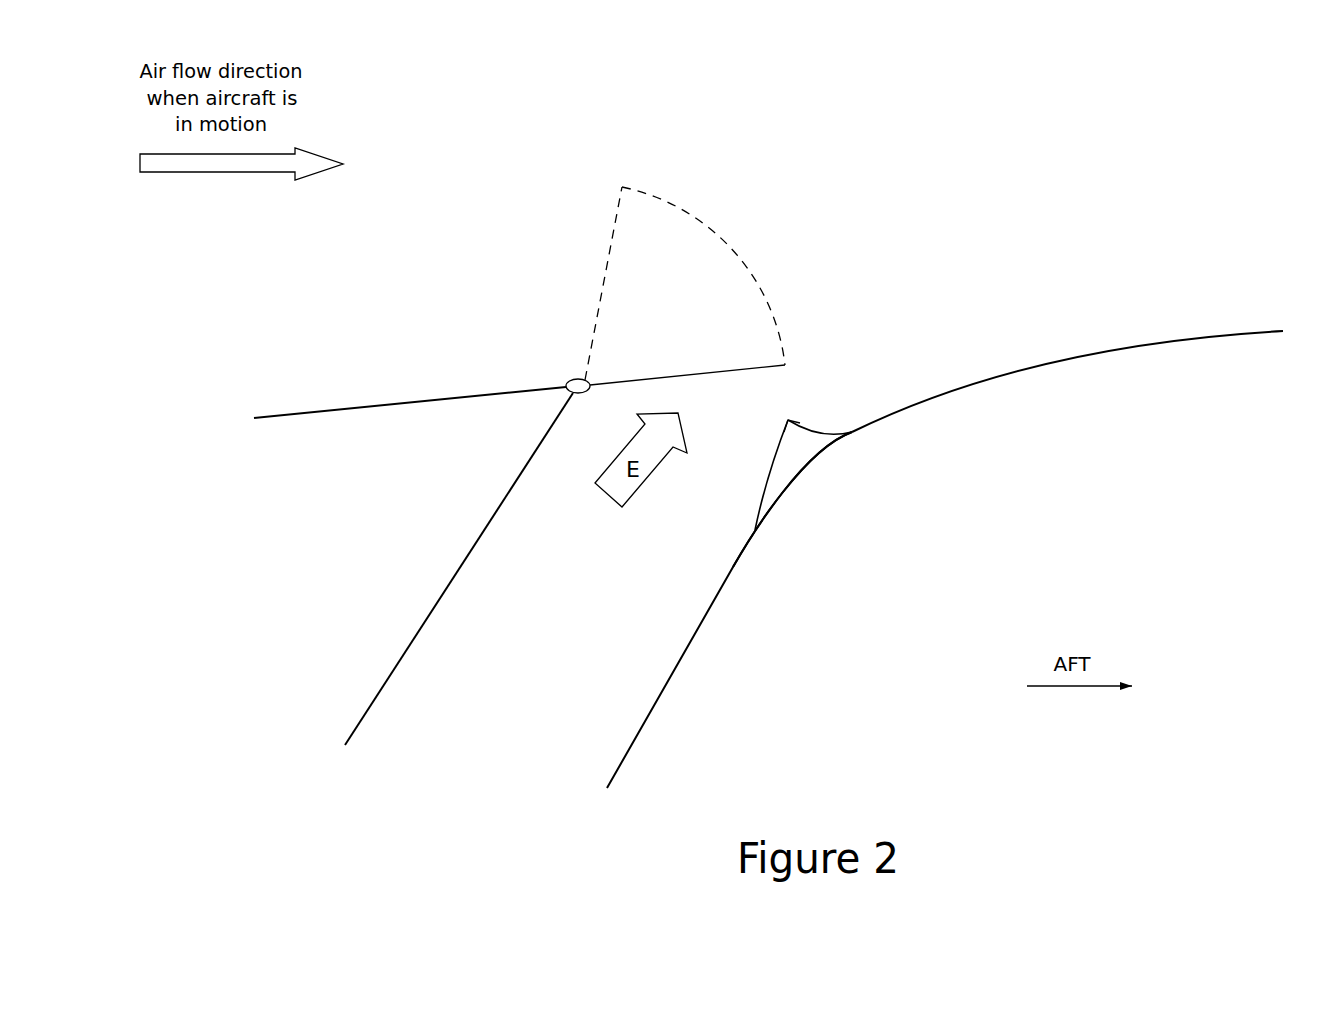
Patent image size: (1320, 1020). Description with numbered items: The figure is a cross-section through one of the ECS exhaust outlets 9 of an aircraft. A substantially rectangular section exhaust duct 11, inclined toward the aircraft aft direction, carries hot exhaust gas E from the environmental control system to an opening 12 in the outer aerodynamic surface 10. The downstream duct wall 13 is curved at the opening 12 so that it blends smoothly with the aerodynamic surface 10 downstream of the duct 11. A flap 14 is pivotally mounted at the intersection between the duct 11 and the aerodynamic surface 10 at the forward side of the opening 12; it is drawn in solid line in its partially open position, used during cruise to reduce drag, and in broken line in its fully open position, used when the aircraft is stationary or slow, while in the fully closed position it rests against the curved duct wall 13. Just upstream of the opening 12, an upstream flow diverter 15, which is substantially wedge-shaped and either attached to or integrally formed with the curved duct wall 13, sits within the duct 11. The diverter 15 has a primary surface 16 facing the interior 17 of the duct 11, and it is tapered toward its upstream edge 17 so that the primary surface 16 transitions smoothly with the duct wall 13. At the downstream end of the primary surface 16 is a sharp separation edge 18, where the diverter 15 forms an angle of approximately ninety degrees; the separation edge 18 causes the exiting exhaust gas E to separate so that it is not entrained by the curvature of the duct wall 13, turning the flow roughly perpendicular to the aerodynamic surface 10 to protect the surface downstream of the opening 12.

The exhaust outlet 9 is at (548, 208).
The outer aerodynamic surface 10 is at (407, 400).
The exhaust duct 11 is at (403, 652).
The opening 12 is at (717, 400).
The downstream duct wall 13 is at (728, 573).
The flap 14 is at (777, 325).
The upstream flow diverter 15 is at (793, 440).
The primary surface 16 is at (774, 466).
The interior of the duct / upstream edge 17 is at (768, 512).
The separation edge 18 is at (792, 418).